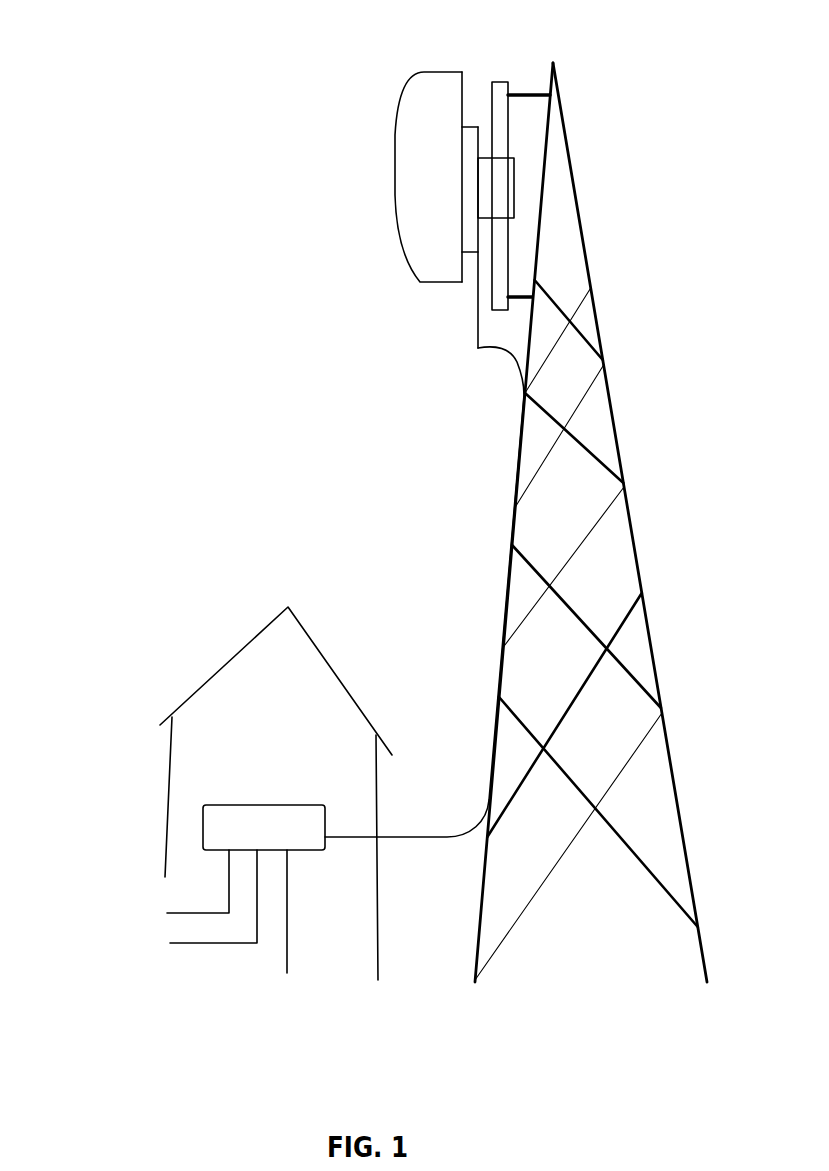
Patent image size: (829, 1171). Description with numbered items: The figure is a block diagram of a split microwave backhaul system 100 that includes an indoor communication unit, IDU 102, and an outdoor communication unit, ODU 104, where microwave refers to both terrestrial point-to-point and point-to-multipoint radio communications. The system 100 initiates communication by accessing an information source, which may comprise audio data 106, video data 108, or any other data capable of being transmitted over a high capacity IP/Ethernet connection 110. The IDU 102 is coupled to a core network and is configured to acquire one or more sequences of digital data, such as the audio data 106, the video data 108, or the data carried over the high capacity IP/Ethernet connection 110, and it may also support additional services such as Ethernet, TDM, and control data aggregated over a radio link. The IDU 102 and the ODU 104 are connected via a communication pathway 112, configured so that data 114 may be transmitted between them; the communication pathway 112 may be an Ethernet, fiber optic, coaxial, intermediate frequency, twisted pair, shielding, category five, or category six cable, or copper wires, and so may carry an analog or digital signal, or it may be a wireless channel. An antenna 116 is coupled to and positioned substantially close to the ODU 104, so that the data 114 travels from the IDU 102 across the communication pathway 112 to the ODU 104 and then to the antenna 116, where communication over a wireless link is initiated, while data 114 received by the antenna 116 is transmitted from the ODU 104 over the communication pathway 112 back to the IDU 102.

The split microwave backhaul system 100 is at (147, 161).
The indoor communication unit (IDU) 102 is at (224, 805).
The outdoor communication unit (ODU) 104 is at (473, 94).
The audio data 106 is at (198, 882).
The video data 108 is at (213, 897).
The high capacity IP/Ethernet connection 110 is at (313, 934).
The communication pathway 112 is at (478, 349).
The data 114 is at (430, 824).
The antenna 116 is at (396, 114).